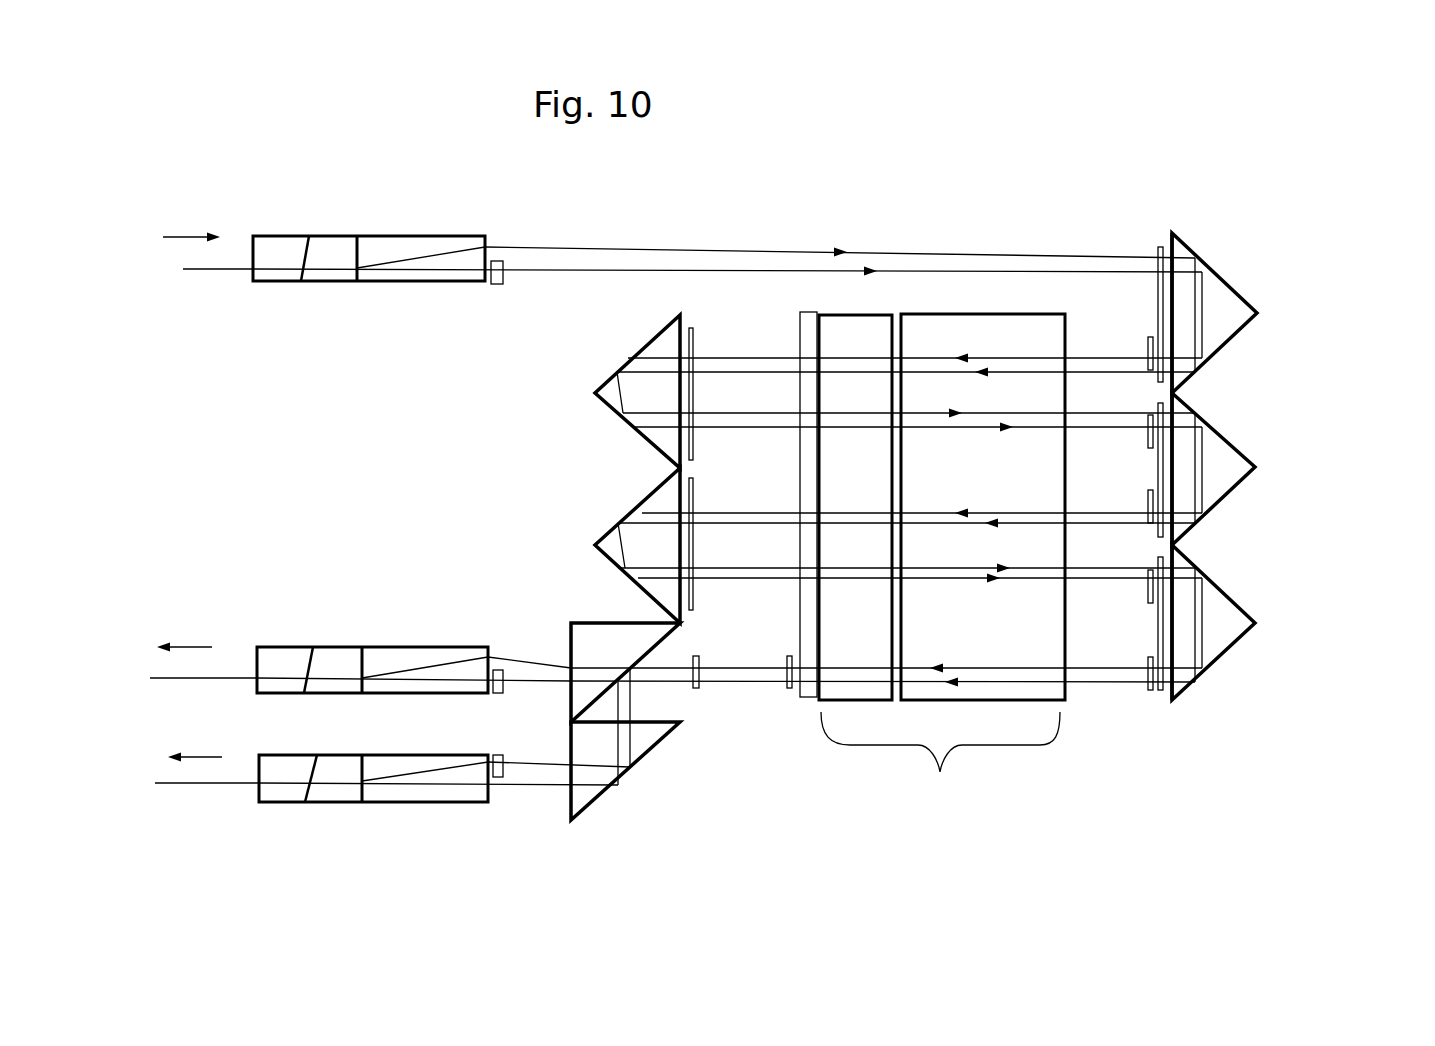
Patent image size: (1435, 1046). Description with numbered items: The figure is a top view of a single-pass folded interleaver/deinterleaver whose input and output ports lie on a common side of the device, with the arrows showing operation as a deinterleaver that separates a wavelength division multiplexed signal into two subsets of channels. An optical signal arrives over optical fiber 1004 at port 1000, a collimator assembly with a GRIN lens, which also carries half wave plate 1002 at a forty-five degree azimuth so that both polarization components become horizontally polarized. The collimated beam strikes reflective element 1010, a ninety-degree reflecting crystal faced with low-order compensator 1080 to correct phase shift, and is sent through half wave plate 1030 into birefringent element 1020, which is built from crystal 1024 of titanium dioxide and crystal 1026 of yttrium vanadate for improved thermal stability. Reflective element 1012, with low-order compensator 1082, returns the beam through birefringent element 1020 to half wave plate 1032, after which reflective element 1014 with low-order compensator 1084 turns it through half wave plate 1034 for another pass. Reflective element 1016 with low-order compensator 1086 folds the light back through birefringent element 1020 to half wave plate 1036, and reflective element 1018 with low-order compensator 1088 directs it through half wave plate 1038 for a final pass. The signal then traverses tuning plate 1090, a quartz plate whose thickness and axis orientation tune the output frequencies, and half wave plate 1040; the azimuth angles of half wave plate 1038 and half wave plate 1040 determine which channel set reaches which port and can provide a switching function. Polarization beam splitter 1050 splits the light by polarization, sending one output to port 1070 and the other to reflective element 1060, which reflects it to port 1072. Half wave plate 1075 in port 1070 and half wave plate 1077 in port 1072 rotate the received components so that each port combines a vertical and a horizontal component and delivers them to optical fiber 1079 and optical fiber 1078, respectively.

The port 1000 is at (422, 228).
The half wave plate 1002 is at (500, 287).
The optical fiber 1004 is at (216, 270).
The reflective element 1010 is at (1259, 303).
The reflective element 1012 is at (593, 393).
The reflective element 1014 is at (1258, 460).
The reflective element 1016 is at (604, 528).
The reflective element 1018 is at (1260, 627).
The birefringent element 1020 is at (944, 782).
The crystal 1024 is at (855, 306).
The crystal 1026 is at (982, 310).
The half wave plate 1030 is at (1146, 354).
The half wave plate 1032 is at (1146, 429).
The half wave plate 1034 is at (1146, 505).
The half wave plate 1036 is at (1147, 589).
The half wave plate 1038 is at (1147, 679).
The half wave plate 1040 is at (704, 671).
The polarization beam splitter 1050 is at (624, 616).
The reflective element 1060 is at (574, 822).
The port 1070 is at (425, 643).
The port 1072 is at (427, 805).
The half wave plate 1075 is at (495, 697).
The half wave plate 1077 is at (492, 754).
The optical fiber 1078 is at (200, 783).
The optical fiber 1079 is at (218, 677).
The low-order compensator 1080 is at (1160, 232).
The low-order compensator 1082 is at (698, 338).
The low-order compensator 1084 is at (1176, 389).
The low-order compensator 1086 is at (700, 495).
The low-order compensator 1088 is at (1161, 697).
The tuning plate 1090 is at (790, 692).